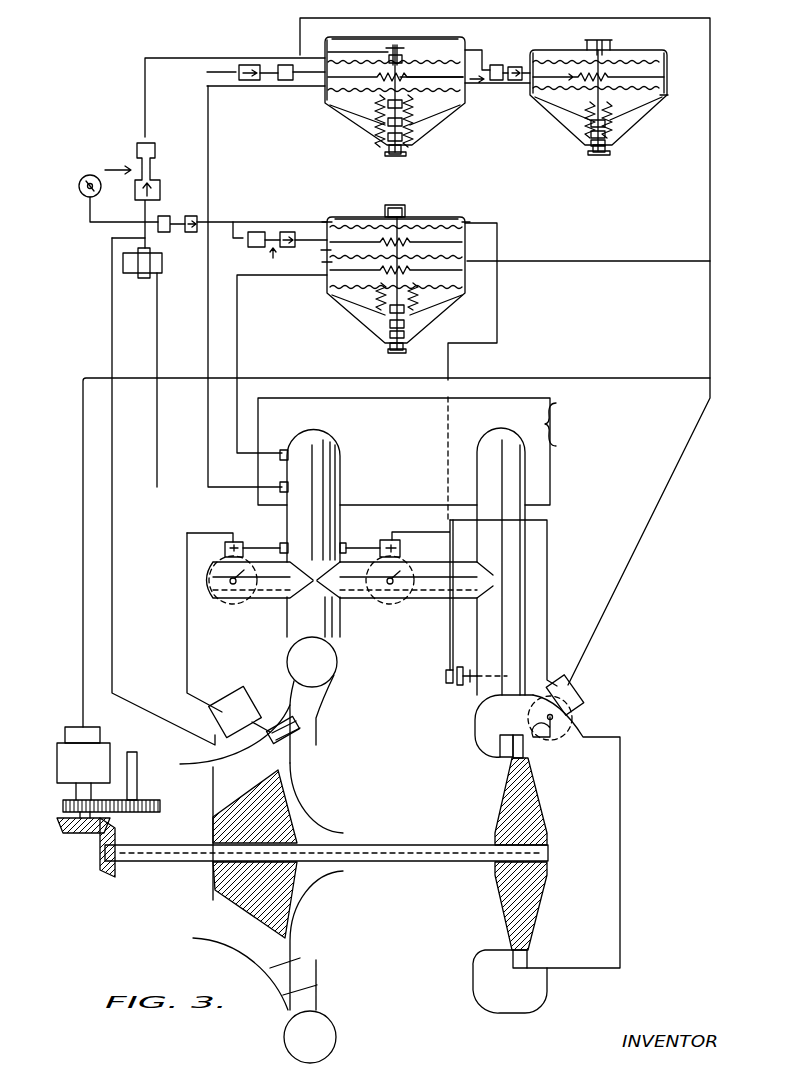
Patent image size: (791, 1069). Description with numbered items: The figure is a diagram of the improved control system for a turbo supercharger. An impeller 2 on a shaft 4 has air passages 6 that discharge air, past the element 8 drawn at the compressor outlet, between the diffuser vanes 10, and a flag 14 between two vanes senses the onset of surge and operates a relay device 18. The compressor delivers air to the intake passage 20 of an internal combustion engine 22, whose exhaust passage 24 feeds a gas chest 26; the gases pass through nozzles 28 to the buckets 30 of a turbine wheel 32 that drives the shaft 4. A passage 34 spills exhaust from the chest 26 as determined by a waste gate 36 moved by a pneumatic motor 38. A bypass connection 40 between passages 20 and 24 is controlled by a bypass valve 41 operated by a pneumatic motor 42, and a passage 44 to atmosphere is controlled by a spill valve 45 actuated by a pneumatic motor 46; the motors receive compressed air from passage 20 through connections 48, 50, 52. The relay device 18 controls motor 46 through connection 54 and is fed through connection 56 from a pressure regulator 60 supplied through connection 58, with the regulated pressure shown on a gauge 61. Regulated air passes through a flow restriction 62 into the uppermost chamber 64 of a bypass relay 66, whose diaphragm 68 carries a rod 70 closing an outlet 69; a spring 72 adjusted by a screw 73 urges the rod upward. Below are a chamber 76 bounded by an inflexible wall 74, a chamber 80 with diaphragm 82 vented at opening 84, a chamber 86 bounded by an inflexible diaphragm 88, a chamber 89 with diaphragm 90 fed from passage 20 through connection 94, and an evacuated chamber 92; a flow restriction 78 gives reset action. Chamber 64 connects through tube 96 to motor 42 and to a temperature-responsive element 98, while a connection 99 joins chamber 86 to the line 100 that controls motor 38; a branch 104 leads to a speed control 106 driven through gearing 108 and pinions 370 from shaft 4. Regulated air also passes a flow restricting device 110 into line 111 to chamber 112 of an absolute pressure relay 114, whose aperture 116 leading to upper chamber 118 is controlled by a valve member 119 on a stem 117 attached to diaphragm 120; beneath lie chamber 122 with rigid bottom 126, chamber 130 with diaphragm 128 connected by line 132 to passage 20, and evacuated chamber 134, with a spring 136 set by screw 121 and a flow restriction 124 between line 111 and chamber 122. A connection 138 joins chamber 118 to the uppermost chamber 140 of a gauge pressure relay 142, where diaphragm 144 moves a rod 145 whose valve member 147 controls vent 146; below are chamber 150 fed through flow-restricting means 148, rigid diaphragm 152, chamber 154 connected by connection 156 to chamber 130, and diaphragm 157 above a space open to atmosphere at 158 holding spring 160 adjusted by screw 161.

The impeller 2 is at (270, 813).
The shaft 4 is at (390, 845).
The air passages 6 is at (240, 786).
The fuel nozzle 8 is at (283, 715).
The diffuser vanes 10 is at (305, 713).
The flag 14 is at (297, 733).
The relay device 18 is at (233, 702).
The intake passage 20 is at (328, 493).
The internal combustion engine 22 is at (390, 452).
The exhaust passage 24 is at (518, 478).
The gas chest 26 is at (480, 720).
The nozzles 28 is at (500, 750).
The buckets 30 is at (525, 750).
The turbine wheel 32 is at (530, 825).
The passage 34 is at (585, 730).
The waste gate 36 is at (553, 722).
The pneumatic motor 38 is at (560, 680).
The bypass connection 40 is at (425, 598).
The bypass valve 41 is at (396, 598).
The pneumatic motor 42 is at (400, 548).
The passage 44 is at (268, 598).
The spill valve 45 is at (238, 598).
The pneumatic motor 46 is at (225, 548).
The connection 48 is at (259, 548).
The connection 50 is at (358, 548).
The connection 52 is at (548, 578).
The connection 54 is at (186, 643).
The connection 56 is at (114, 520).
The connection 58 is at (158, 420).
The pressure regulator 60 is at (138, 273).
The gauge 61 is at (90, 175).
The flow restriction 62 is at (180, 212).
The uppermost chamber 64 is at (422, 218).
The bypass relay 66 is at (464, 214).
The diaphragm 68 is at (352, 223).
The outlet 69 is at (385, 212).
The rod 70 is at (392, 238).
The spring 72 is at (388, 325).
The screw 73 is at (405, 351).
The inflexible wall 74 is at (342, 243).
The chamber 76 is at (470, 223).
The flow restriction 78 is at (268, 232).
The chamber 80 is at (455, 240).
The diaphragm 82 is at (323, 262).
The opening 84 is at (320, 250).
The chamber 86 is at (455, 268).
The inflexible diaphragm 88 is at (330, 287).
The chamber 89 is at (462, 292).
The diaphragm 90 is at (360, 292).
The evacuated chamber 92 is at (365, 305).
The connection 94 is at (238, 335).
The tube 96 is at (498, 322).
The temperature-responsive element 98 is at (449, 685).
The connection 99 is at (607, 261).
The line 100 is at (710, 220).
The branch 104 is at (590, 378).
The speed control 106 is at (65, 760).
The gearing 108 is at (93, 833).
The flow restricting device 110 is at (153, 148).
The line 111 is at (144, 105).
The chamber 112 is at (333, 44).
The absolute pressure relay 114 is at (397, 36).
The aperture 116 is at (396, 50).
The stem 117 is at (388, 72).
The upper chamber 118 is at (378, 47).
The valve member 119 is at (402, 60).
The flexible diaphragm 120 is at (458, 52).
The screw 121 is at (405, 153).
The chamber 122 is at (448, 80).
The flow restriction 124 is at (277, 58).
The rigid bottom 126 is at (327, 94).
The flexible diaphragm 128 is at (350, 95).
The chamber 130 is at (435, 82).
The line 132 is at (207, 280).
The evacuated chamber 134 is at (380, 108).
The spring 136 is at (388, 128).
The connection 138 is at (497, 62).
The uppermost chamber 140 is at (571, 53).
The gauge pressure relay 142 is at (656, 44).
The flexible diaphragm 144 is at (662, 55).
The rod 145 is at (594, 100).
The vent 146 is at (605, 50).
The valve member 147 is at (607, 62).
The flow-restricting means 148 is at (515, 64).
The chamber 150 is at (653, 70).
The rigid diaphragm 152 is at (656, 80).
The chamber 154 is at (562, 85).
The connection 156 is at (486, 86).
The flexible diaphragm 157 is at (632, 90).
The atmospheric opening 158 is at (665, 97).
The spring 160 is at (588, 125).
The screw 161 is at (606, 155).
The pinions 370 is at (118, 813).